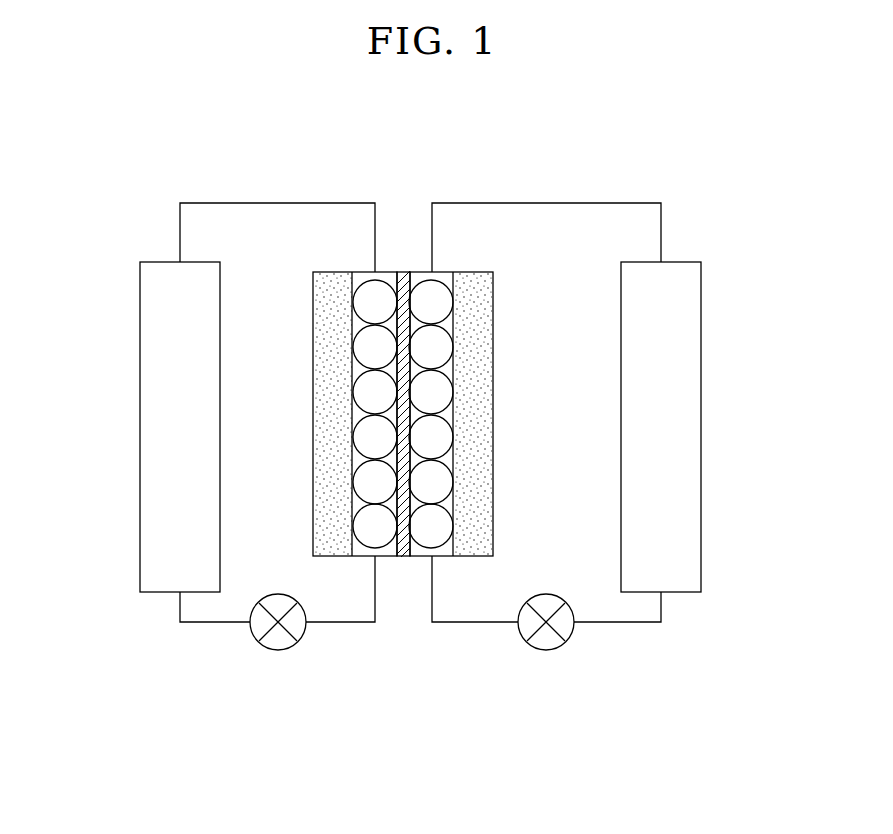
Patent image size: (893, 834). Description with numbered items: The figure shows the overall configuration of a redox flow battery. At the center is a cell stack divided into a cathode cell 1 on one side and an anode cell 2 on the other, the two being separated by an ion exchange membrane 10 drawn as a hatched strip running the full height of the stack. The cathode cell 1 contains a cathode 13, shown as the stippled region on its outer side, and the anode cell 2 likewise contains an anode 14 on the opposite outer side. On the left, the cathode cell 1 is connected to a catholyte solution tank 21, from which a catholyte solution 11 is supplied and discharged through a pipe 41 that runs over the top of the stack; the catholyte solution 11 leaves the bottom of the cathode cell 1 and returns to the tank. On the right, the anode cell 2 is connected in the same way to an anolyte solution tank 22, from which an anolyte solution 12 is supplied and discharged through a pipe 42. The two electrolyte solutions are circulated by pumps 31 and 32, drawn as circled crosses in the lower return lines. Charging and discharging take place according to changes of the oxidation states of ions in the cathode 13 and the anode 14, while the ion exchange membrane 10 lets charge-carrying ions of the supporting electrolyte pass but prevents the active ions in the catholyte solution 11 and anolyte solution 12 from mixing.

The cathode cell 1 is at (308, 304).
The anode cell 2 is at (498, 304).
The ion exchange membrane 10 is at (405, 262).
The catholyte solution 11 is at (362, 556).
The anolyte solution 12 is at (440, 556).
The cathode 13 is at (330, 505).
The anode 14 is at (478, 505).
The catholyte solution tank 21 is at (140, 326).
The anolyte solution tank 22 is at (701, 326).
The pump 31 is at (278, 650).
The pump 32 is at (546, 650).
The pipe 41 is at (283, 203).
The pipe 42 is at (546, 203).